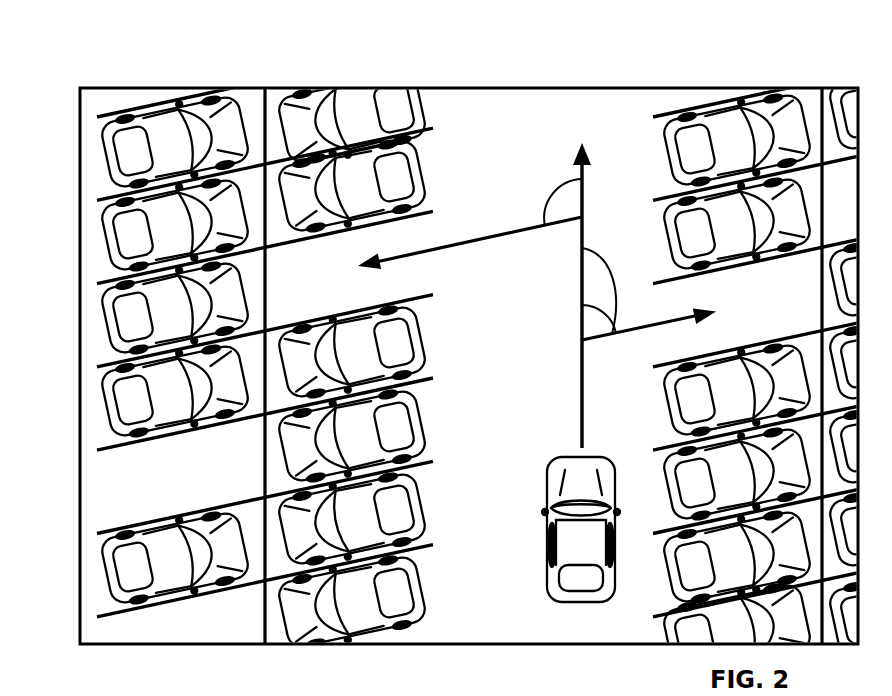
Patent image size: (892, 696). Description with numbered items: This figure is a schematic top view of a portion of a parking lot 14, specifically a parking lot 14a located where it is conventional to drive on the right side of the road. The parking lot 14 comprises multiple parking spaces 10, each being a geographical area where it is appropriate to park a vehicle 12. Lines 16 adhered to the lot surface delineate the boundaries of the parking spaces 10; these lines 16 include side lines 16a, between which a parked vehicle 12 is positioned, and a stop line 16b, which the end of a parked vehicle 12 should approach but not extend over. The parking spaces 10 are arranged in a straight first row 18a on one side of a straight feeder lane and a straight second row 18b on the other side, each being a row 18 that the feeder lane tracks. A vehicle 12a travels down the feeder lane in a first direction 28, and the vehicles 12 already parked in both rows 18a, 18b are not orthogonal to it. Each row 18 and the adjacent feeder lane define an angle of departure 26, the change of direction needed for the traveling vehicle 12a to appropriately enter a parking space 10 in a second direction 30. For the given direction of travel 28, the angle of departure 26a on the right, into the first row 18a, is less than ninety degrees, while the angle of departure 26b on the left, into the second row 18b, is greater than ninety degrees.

The parking space 10 is at (224, 470).
The vehicle 12 is at (98, 255).
The vehicle traveling down the feeder lane 12a is at (546, 530).
The parking lot 14 is at (481, 342).
The parking lot 14a is at (264, 87).
The lines 16 is at (477, 331).
The side lines 16a is at (416, 382).
The stop line 16b is at (272, 291).
The row 18 is at (544, 354).
The first row 18a is at (722, 87).
The second row 18b is at (360, 83).
The angle of departure 26 is at (524, 252).
The angle of departure on the right 26a is at (582, 248).
The angle of departure on the left 26b is at (547, 197).
The first direction 28 is at (580, 379).
The second direction 30 is at (518, 229).